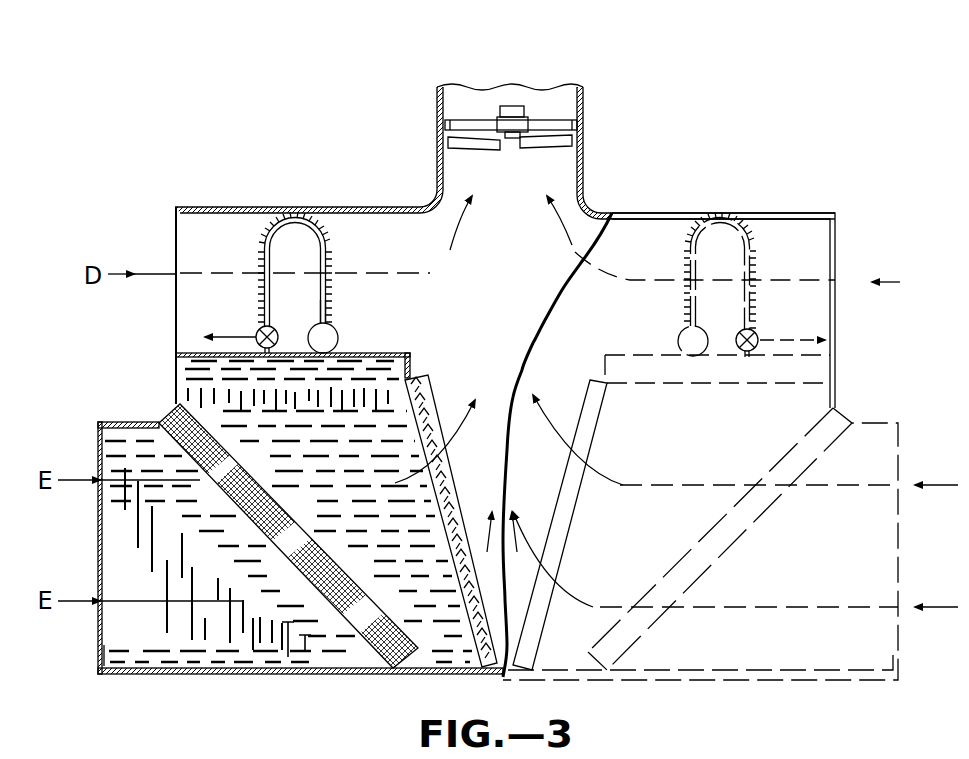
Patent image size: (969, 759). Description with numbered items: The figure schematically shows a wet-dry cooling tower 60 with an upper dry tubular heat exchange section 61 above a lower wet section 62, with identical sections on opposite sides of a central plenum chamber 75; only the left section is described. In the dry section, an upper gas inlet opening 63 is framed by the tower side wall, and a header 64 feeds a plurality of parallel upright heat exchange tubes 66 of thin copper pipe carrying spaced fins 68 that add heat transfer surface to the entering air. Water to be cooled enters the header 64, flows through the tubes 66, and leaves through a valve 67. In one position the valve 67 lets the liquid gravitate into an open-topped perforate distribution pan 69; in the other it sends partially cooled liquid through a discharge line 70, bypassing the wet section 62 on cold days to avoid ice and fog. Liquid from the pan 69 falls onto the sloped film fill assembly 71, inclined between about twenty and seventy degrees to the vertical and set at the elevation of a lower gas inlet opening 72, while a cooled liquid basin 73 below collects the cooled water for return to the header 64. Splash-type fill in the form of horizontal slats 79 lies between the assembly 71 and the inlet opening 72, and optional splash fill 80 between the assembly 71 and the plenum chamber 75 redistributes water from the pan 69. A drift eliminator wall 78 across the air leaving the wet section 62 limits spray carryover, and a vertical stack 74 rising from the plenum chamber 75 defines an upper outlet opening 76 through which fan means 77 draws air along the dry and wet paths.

The wet-dry cooling tower 60 is at (708, 142).
The upper dry tubular heat exchange section 61 is at (203, 308).
The lower wet section 62 is at (371, 531).
The upper gas inlet opening 63 is at (172, 304).
The header 64 is at (340, 340).
The heat exchange tube 66 is at (330, 312).
The valve 67 is at (276, 330).
The fins 68 is at (332, 251).
The distribution pan 69 is at (412, 365).
The discharge line 70 is at (232, 334).
The sloped film fill assembly 71 is at (357, 612).
The lower gas inlet opening 72 is at (96, 548).
The cooled liquid basin 73 is at (200, 675).
The vertical stack 74 is at (585, 161).
The central plenum chamber 75 is at (493, 282).
The upper outlet opening 76 is at (471, 100).
The fan means 77 is at (541, 140).
The drift eliminator wall 78 is at (450, 490).
The horizontal slats 79 is at (305, 653).
The splash-type fill 80 is at (465, 645).